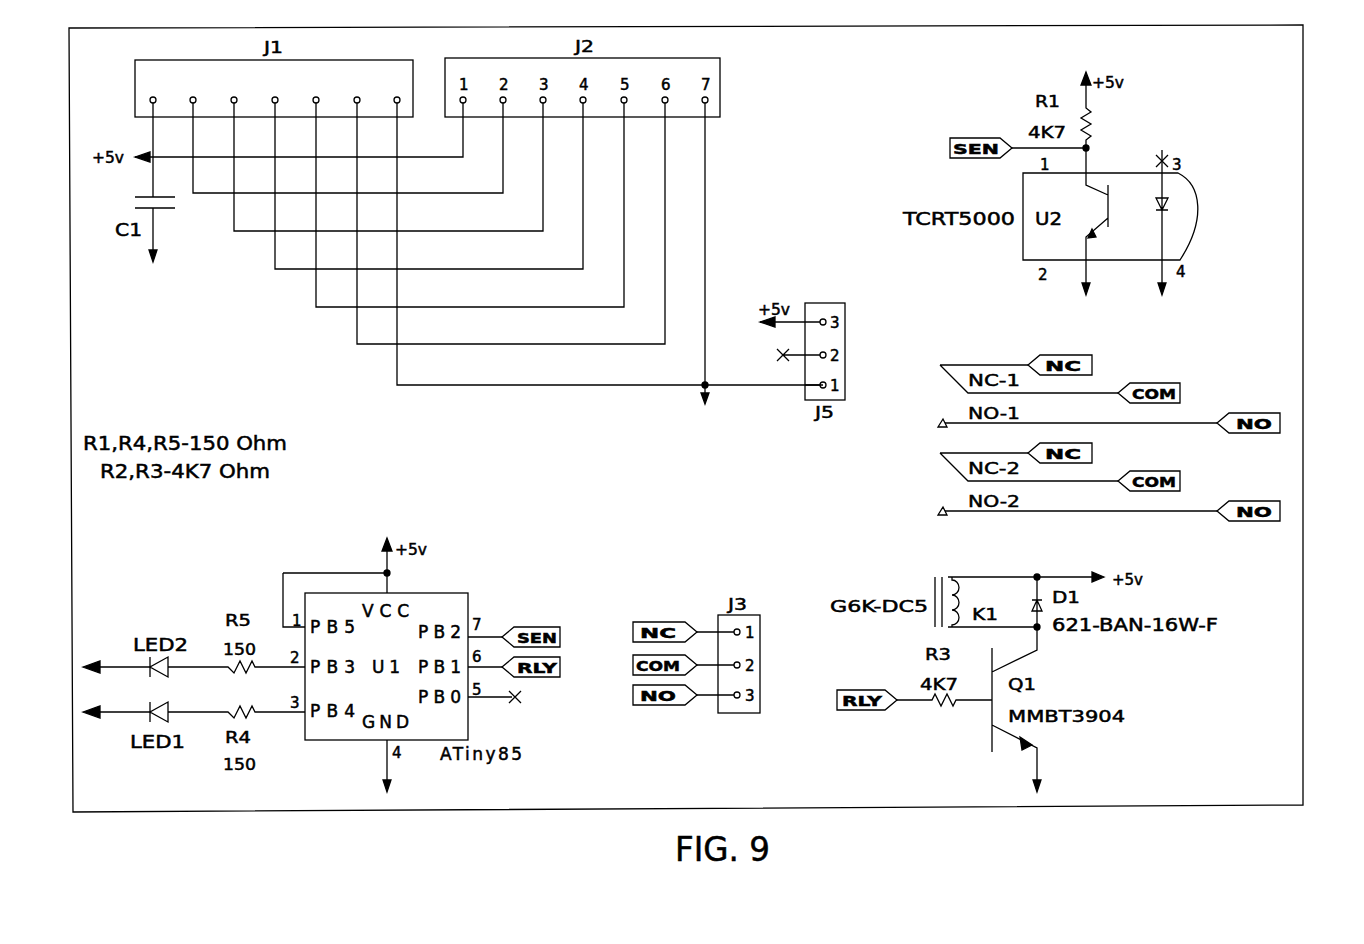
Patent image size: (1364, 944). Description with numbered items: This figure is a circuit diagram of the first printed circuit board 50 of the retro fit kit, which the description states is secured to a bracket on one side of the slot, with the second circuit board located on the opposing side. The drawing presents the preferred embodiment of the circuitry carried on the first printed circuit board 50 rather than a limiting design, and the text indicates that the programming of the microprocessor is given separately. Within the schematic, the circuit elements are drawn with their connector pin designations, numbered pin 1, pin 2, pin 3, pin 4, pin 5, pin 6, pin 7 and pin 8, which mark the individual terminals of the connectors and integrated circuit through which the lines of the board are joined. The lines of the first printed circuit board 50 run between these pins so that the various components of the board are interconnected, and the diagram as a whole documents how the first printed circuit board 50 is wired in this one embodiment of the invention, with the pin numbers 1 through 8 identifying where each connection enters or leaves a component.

The first printed circuit board 50 is at (1280, 672).
The connector pin 1 is at (154, 89).
The connector pin 2 is at (194, 89).
The connector pin 3 is at (235, 89).
The connector pin 4 is at (276, 89).
The connector pin 5 is at (317, 89).
The connector pin 6 is at (358, 89).
The connector pin 7 is at (398, 89).
The VCC pin 8 is at (393, 573).